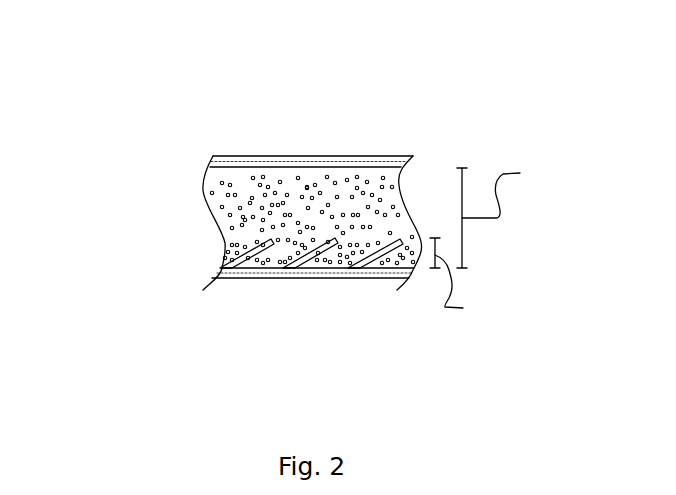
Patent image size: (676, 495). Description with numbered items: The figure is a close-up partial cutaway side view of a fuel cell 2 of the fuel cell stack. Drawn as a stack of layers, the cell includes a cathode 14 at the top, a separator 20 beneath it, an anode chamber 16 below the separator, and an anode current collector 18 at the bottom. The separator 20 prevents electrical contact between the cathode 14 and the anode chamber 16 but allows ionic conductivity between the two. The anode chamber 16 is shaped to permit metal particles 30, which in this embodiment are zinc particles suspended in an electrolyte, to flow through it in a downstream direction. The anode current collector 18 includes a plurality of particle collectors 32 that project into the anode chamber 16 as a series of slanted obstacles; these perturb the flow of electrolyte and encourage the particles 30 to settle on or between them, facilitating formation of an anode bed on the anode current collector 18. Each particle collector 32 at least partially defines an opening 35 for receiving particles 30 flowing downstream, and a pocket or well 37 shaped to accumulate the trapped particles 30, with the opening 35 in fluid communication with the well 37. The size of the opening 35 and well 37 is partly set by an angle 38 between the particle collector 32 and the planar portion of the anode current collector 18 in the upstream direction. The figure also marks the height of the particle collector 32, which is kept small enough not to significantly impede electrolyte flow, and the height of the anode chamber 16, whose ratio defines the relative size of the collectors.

The fuel cell 2 is at (193, 95).
The cathode 14 is at (348, 157).
The anode chamber 16 is at (381, 187).
The anode current collector 18 is at (256, 268).
The separator 20 is at (213, 170).
The metal particles 30 is at (217, 207).
The particle collectors 32 is at (264, 249).
The opening 35 is at (363, 240).
The well 37 is at (312, 268).
The angle 38 is at (273, 253).